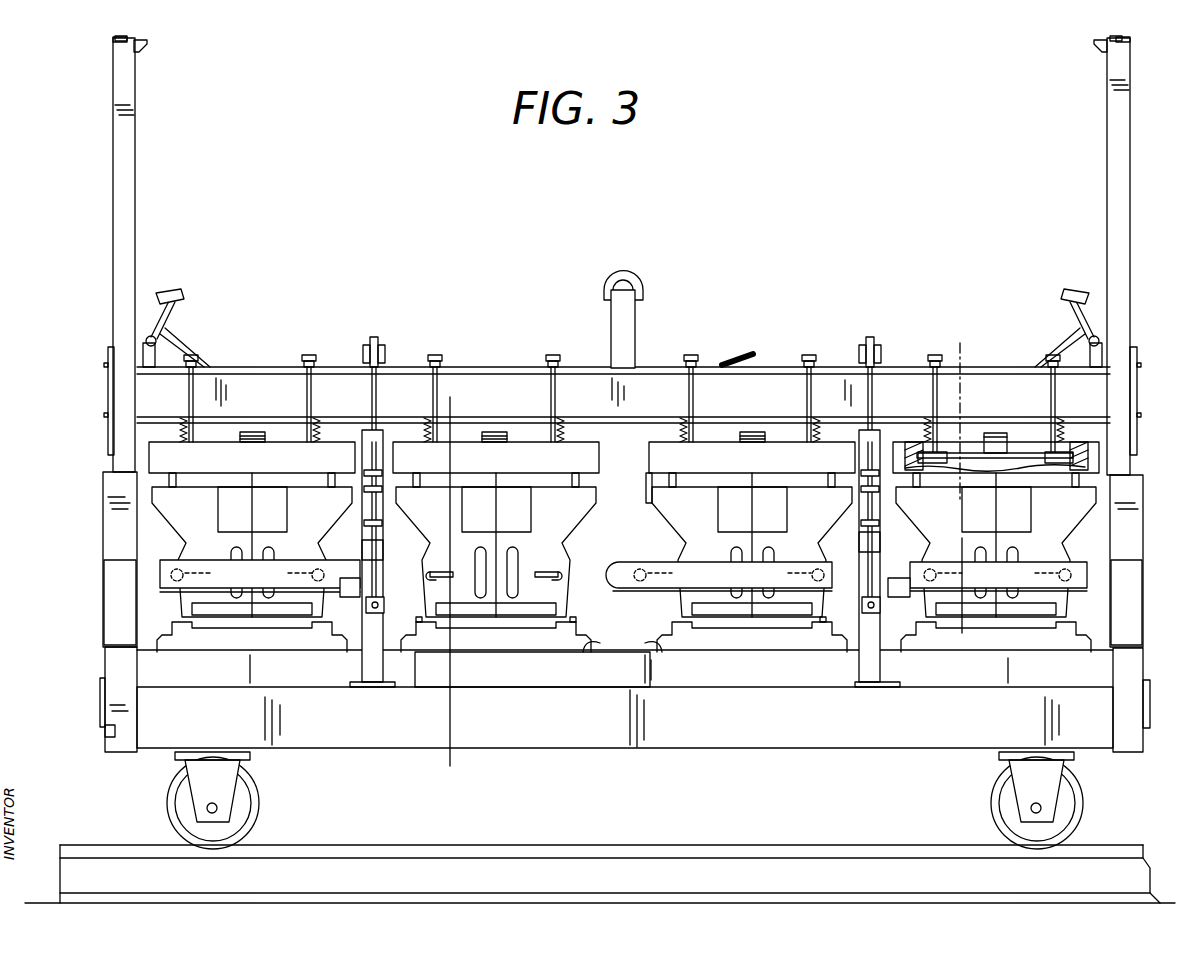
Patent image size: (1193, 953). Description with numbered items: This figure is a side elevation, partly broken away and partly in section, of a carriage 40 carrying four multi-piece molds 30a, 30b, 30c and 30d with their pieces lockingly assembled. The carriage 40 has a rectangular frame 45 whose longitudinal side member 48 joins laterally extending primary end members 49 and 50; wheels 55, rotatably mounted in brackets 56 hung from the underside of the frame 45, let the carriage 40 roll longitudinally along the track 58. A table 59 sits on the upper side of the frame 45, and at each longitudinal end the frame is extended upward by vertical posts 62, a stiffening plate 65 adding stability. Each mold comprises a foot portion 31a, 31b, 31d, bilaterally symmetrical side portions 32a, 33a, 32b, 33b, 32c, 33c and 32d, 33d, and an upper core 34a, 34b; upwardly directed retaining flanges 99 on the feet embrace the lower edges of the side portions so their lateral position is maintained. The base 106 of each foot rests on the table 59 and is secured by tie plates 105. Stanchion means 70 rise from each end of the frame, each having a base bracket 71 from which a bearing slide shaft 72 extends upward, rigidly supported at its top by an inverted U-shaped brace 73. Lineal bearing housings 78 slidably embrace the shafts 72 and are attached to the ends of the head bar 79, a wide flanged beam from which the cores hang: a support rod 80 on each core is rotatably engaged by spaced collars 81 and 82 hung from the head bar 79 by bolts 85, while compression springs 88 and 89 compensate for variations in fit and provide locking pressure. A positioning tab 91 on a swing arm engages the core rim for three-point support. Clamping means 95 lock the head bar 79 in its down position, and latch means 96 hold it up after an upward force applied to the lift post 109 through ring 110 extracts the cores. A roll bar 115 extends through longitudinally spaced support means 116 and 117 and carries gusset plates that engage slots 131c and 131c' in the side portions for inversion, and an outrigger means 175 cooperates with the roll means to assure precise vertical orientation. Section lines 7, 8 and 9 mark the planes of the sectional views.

The section line 7- 7 is at (959, 342).
The section line 8- 8 is at (961, 538).
The section line 9- 9 is at (450, 397).
The mold 30a is at (1027, 520).
The mold 30b is at (729, 520).
The mold 30c is at (612, 520).
The mold 30d is at (397, 516).
The foot portion 31a is at (996, 647).
The foot portion 31b is at (745, 652).
The foot portion 31d is at (222, 652).
The side portion 32a is at (1071, 524).
The side portion 32b is at (852, 502).
The side portion 32c is at (596, 503).
The side portion 32d is at (352, 505).
The side portion 33a is at (1010, 524).
The side portion 33b is at (708, 518).
The side portion 33c is at (448, 524).
The side portion 33d is at (212, 520).
The upper core 34a is at (1104, 452).
The upper core 34b is at (648, 461).
The carriage 40 is at (623, 330).
The frame 45 is at (625, 722).
The longitudinal side member 48 is at (837, 728).
The primary end member 49 is at (102, 737).
The primary end member 50 is at (1146, 732).
The wheel 55 is at (245, 812).
The bracket 56 is at (217, 781).
The track 58 is at (513, 847).
The table 59 is at (603, 668).
The vertical post 62 is at (120, 655).
The stiffening plate 65 is at (100, 700).
The stanchion means 70 is at (100, 490).
The base bracket 71 is at (115, 573).
The bearing slide shaft 72 is at (112, 40).
The brace 73 is at (118, 163).
The lineal bearing housing 78 is at (108, 392).
The head bar 79 is at (495, 382).
The support rod 80 is at (914, 450).
The collar 81 is at (920, 452).
The collar 82 is at (1076, 442).
The bolt 85 is at (1050, 396).
The compression spring 88 is at (932, 445).
The compression spring 89 is at (1056, 448).
The positioning tab 91 is at (258, 432).
The clamping means 95 is at (384, 335).
The latch means 96 is at (180, 316).
The retaining flange 99 is at (568, 620).
The tie plate 105 is at (622, 642).
The base 106 is at (512, 652).
The lift post 109 is at (624, 337).
The ring 110 is at (630, 264).
The roll bar 115 is at (165, 578).
The support means 116 is at (358, 464).
The support means 117 is at (853, 458).
The slot 131c is at (527, 558).
The slot 131c' is at (500, 555).
The outrigger means 175 is at (365, 549).